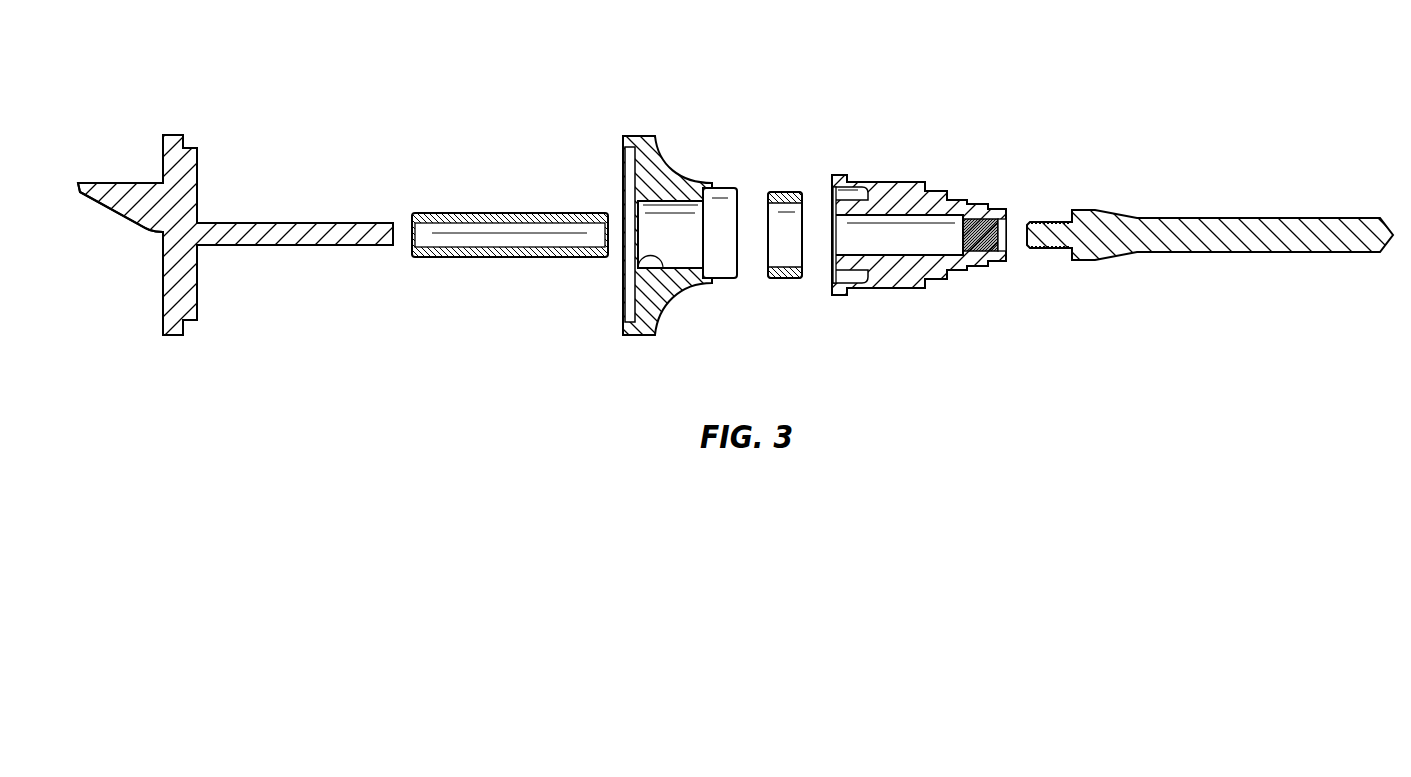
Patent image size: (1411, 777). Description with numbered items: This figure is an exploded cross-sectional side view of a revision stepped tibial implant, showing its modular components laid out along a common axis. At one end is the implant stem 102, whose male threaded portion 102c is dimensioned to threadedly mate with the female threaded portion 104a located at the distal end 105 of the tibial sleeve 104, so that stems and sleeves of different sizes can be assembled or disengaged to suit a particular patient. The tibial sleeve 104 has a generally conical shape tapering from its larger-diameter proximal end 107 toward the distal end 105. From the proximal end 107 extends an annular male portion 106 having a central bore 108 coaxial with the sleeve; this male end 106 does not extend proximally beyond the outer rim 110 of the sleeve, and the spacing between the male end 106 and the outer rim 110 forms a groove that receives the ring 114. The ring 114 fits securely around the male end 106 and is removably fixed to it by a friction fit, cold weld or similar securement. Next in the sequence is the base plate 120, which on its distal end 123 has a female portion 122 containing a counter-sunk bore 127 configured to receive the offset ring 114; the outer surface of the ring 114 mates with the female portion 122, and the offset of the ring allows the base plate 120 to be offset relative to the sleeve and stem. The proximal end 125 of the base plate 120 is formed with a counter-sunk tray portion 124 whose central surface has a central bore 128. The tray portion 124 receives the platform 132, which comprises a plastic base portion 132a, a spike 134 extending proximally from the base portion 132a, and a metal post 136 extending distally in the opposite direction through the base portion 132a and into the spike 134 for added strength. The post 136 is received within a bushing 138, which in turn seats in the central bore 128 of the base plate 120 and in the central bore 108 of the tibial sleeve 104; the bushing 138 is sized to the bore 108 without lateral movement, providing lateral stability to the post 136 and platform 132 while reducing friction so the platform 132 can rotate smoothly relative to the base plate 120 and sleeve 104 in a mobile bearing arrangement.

The implant stem 102 is at (1238, 217).
The male threaded portion 102c is at (1050, 240).
The tibial sleeve 104 is at (906, 166).
The female threaded portion 104a is at (982, 217).
The distal end 105 is at (985, 277).
The annular male portion 106 is at (850, 207).
The proximal end 107 is at (837, 303).
The central bore 108 is at (907, 247).
The outer rim 110 is at (837, 177).
The ring 114 is at (785, 186).
The base plate 120 is at (643, 135).
The female portion 122 is at (735, 273).
The distal end 123 is at (732, 179).
The counter-sunk tray portion 124 is at (628, 207).
The proximal end 125 is at (618, 129).
The counter-sunk bore 127 is at (725, 237).
The central bore 128 is at (647, 253).
The platform 132 is at (175, 138).
The base portion 132a is at (198, 168).
The spike 134 is at (118, 195).
The post 136 is at (302, 228).
The bushing 138 is at (477, 215).